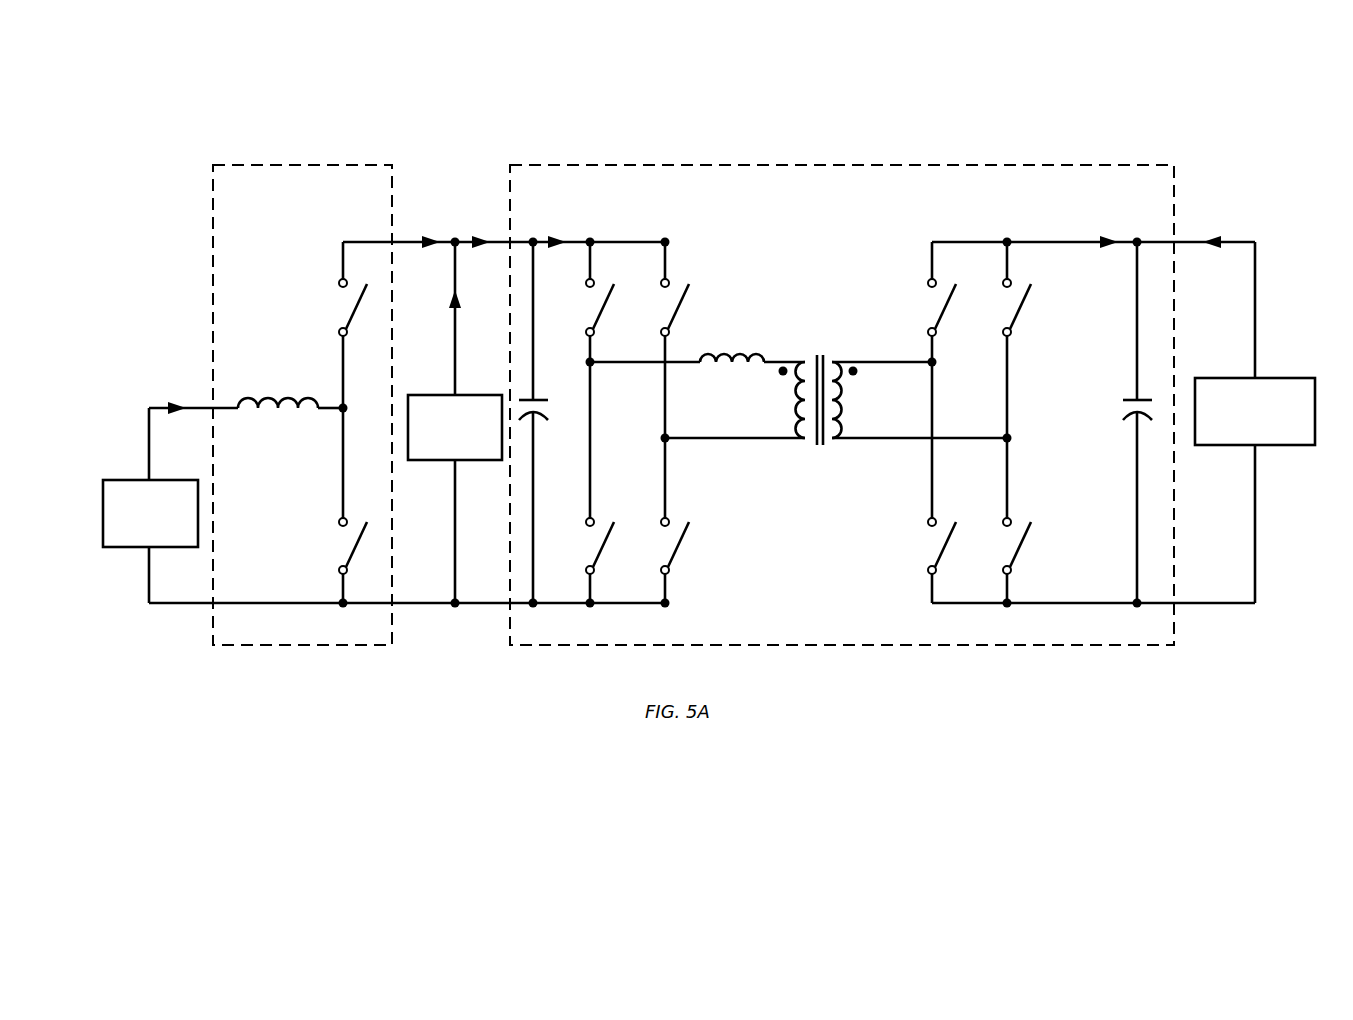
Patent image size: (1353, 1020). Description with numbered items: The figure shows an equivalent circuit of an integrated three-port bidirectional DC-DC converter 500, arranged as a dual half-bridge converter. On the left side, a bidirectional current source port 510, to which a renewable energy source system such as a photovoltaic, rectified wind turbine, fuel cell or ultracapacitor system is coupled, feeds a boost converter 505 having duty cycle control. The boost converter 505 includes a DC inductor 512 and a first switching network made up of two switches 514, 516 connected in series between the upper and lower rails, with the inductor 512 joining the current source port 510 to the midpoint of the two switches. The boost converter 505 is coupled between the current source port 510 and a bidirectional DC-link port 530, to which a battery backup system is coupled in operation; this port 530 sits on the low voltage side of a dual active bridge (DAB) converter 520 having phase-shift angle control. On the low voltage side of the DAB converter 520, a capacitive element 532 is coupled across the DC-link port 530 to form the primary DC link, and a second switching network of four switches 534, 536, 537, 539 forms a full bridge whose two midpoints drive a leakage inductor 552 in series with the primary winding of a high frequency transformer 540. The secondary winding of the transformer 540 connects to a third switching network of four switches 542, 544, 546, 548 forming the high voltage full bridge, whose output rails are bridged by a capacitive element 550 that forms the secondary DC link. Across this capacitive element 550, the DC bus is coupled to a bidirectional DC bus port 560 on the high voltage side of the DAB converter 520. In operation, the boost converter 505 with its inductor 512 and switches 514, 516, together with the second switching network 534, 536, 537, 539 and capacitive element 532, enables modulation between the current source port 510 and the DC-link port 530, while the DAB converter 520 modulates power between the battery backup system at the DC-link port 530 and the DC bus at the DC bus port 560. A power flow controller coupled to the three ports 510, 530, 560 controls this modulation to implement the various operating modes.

The integrated three-port bidirectional DC-DC converter 500 is at (248, 36).
The boost converter 505 is at (213, 219).
The bidirectional current source port 510 is at (103, 480).
The DC inductor 512 is at (262, 398).
The first switching network switch 514 is at (362, 318).
The first switching network switch 516 is at (362, 556).
The dual active bridge (DAB) converter 520 is at (1100, 165).
The bidirectional DC-link port 530 is at (421, 394).
The capacitive element 532 is at (543, 422).
The second switching network switch 534 is at (618, 304).
The second switching network switch 536 is at (610, 545).
The second switching network switch 537 is at (684, 292).
The second switching network switch 539 is at (684, 536).
The high frequency transformer 540 is at (838, 350).
The third switching network switch 542 is at (958, 304).
The third switching network switch 544 is at (952, 545).
The third switching network switch 546 is at (1028, 296).
The third switching network switch 548 is at (1028, 538).
The capacitive element 550 is at (1122, 398).
The leakage inductor 552 is at (743, 368).
The bidirectional DC bus port 560 is at (1275, 378).